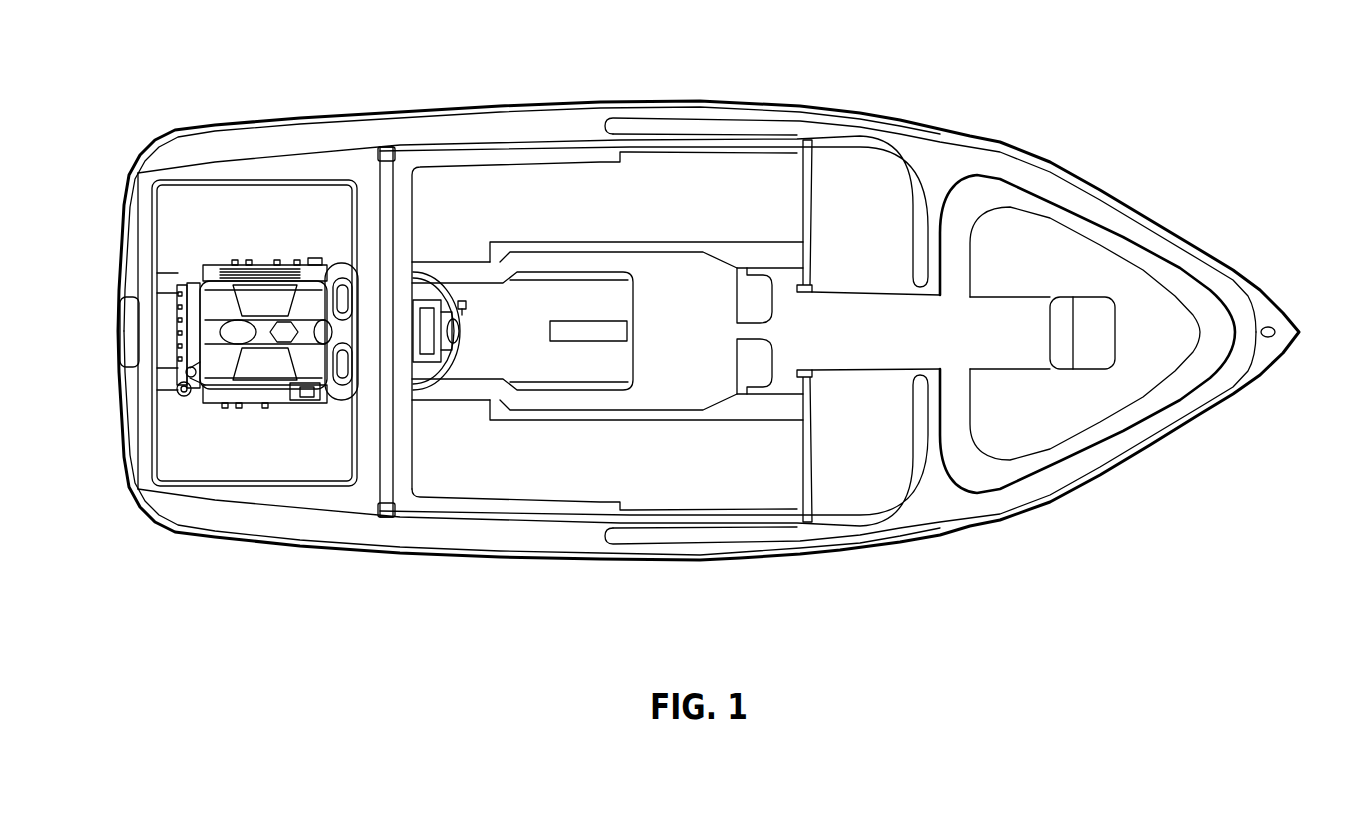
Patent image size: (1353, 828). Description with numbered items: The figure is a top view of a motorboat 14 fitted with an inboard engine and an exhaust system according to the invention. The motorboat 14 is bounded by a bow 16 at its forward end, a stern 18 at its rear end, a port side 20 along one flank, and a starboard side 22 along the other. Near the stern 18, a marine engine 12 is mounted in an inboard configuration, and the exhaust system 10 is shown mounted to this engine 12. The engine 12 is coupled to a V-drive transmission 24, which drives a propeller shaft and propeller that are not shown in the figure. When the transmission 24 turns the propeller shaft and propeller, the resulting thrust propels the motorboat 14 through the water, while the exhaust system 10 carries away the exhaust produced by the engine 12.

The exhaust system 10 is at (341, 263).
The marine engine 12 is at (254, 262).
The motorboat 14 is at (970, 135).
The bow 16 is at (1299, 332).
The stern 18 is at (118, 332).
The port side 20 is at (627, 101).
The starboard side 22 is at (637, 562).
The V-drive transmission 24 is at (454, 332).